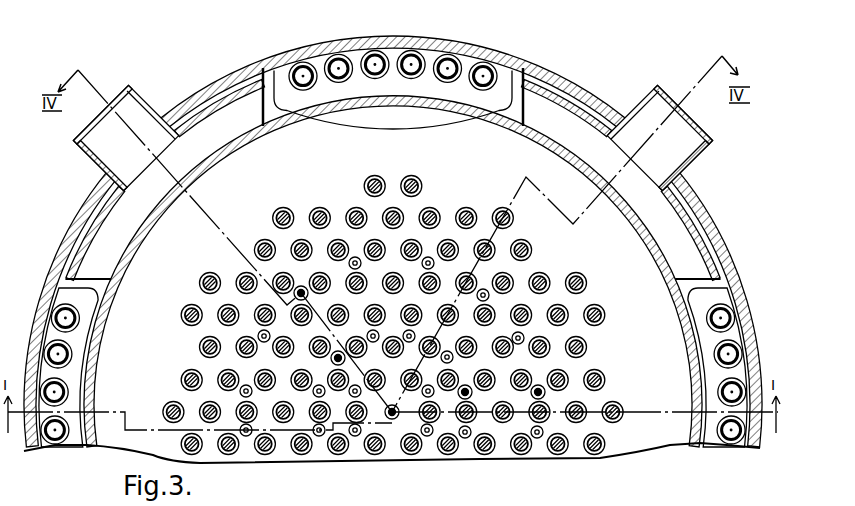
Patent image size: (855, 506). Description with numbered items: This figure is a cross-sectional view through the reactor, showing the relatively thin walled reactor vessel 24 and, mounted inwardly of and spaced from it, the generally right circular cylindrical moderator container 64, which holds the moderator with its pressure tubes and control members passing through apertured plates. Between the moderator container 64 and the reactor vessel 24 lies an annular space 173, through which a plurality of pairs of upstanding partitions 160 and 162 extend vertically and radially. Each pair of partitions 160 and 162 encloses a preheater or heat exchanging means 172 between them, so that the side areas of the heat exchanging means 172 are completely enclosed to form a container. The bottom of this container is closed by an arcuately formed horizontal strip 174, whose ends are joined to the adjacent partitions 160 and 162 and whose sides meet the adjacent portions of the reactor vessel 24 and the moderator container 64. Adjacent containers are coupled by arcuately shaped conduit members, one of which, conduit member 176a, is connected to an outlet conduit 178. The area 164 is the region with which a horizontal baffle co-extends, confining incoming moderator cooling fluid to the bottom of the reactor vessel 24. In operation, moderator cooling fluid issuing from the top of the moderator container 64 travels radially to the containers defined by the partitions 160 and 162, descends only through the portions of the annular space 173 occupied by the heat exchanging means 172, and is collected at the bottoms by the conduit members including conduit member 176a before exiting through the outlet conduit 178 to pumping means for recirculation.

The reactor vessel 24 is at (417, 24).
The moderator container 64 is at (558, 162).
The upright partition 160 is at (393, 229).
The upright partition 162 is at (66, 273).
The area 164 is at (584, 128).
The heat exchanging means 172 is at (355, 58).
The annular space 173 is at (105, 250).
The arcuately formed horizontal strip 174 is at (517, 110).
The conduit member 176a is at (228, 106).
The outlet conduit 178 is at (144, 99).